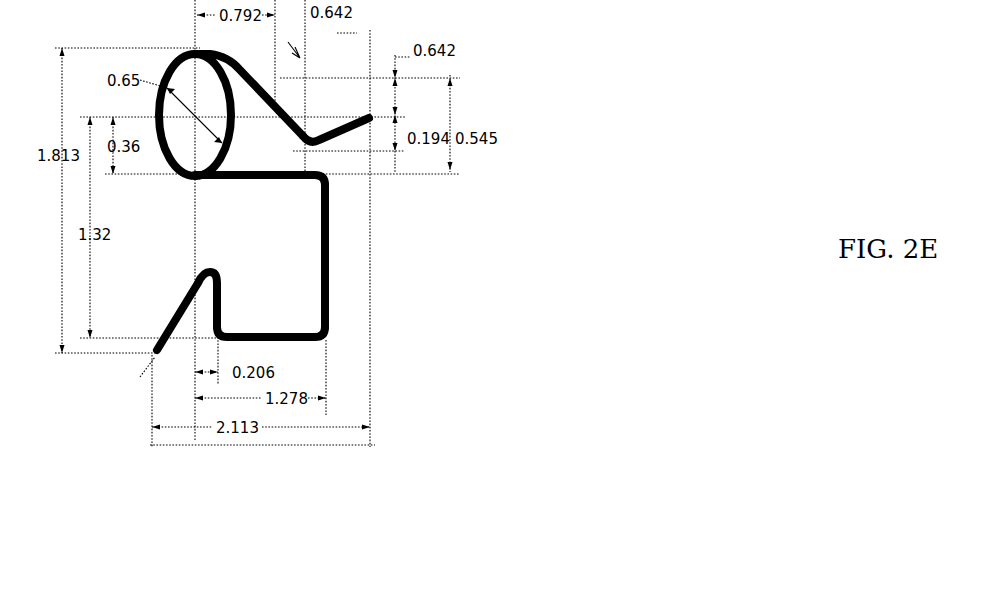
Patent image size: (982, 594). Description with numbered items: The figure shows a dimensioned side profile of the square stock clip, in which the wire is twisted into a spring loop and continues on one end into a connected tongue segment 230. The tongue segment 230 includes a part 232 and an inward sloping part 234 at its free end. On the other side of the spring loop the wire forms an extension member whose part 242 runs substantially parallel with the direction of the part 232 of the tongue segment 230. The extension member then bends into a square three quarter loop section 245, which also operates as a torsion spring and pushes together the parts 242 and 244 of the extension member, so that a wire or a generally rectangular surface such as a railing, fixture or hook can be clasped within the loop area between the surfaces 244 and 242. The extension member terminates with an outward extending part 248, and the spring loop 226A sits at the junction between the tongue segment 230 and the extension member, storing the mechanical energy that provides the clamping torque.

The gasket 226A is at (313, 268).
The tongue segment 230 is at (340, 140).
The part of the tongue segment 232 is at (220, 52).
The inward sloping part 234 is at (293, 103).
The part of the extension member 242 is at (271, 180).
The part of the extension member 244 is at (267, 342).
The square three quarter loop section 245 is at (332, 280).
The leg 248 is at (173, 320).